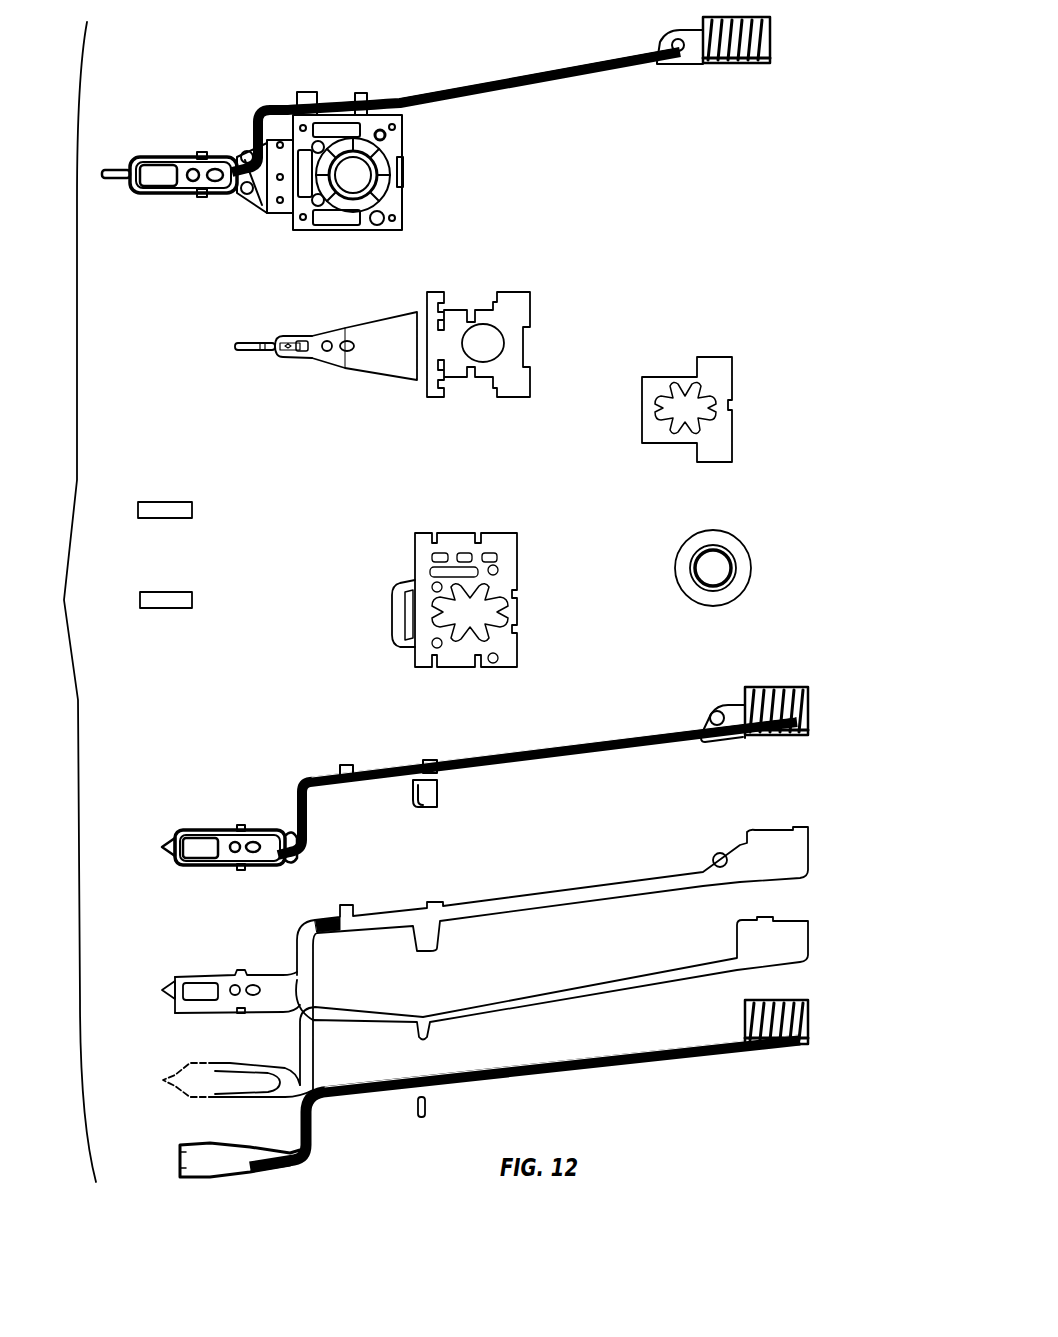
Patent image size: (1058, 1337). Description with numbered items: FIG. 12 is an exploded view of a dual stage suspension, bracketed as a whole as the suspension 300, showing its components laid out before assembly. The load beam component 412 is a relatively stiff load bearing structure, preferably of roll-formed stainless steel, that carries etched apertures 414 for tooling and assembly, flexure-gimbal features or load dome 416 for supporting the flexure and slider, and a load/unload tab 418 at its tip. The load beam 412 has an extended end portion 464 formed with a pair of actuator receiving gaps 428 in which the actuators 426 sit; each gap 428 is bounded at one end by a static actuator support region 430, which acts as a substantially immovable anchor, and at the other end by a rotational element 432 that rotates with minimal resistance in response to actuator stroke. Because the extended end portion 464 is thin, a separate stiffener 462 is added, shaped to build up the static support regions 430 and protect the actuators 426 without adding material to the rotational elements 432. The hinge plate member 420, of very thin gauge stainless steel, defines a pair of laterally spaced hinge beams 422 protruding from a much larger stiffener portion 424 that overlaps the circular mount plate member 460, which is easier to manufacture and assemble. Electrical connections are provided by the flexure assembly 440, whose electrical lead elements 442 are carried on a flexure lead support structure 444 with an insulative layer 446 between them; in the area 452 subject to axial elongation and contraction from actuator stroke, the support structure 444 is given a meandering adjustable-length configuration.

The suspension 300 is at (60, 602).
The load beam component 412 is at (373, 362).
The etched apertures 414 is at (348, 339).
The flexure-gimbal features (load dome) 416 is at (289, 365).
The load/unload tab 418 is at (246, 342).
The hinge plate member 420 is at (532, 603).
The hinge beams 422 is at (403, 582).
The stiffener portion 424 is at (508, 560).
The actuators 426 is at (182, 502).
The actuator receiving gaps 428 is at (473, 314).
The static actuator support region 430 is at (513, 293).
The rotational element 432 is at (437, 295).
The flexure assembly 440 is at (558, 765).
The electrical lead elements 442 is at (562, 1077).
The flexure lead support structure 444 is at (485, 923).
The insulative layer 446 is at (558, 993).
The area subject to axial elongation and contraction 452 is at (322, 921).
The circular mount plate member 460 is at (737, 565).
The stiffener 462 is at (718, 357).
The extended end portion 464 is at (520, 350).